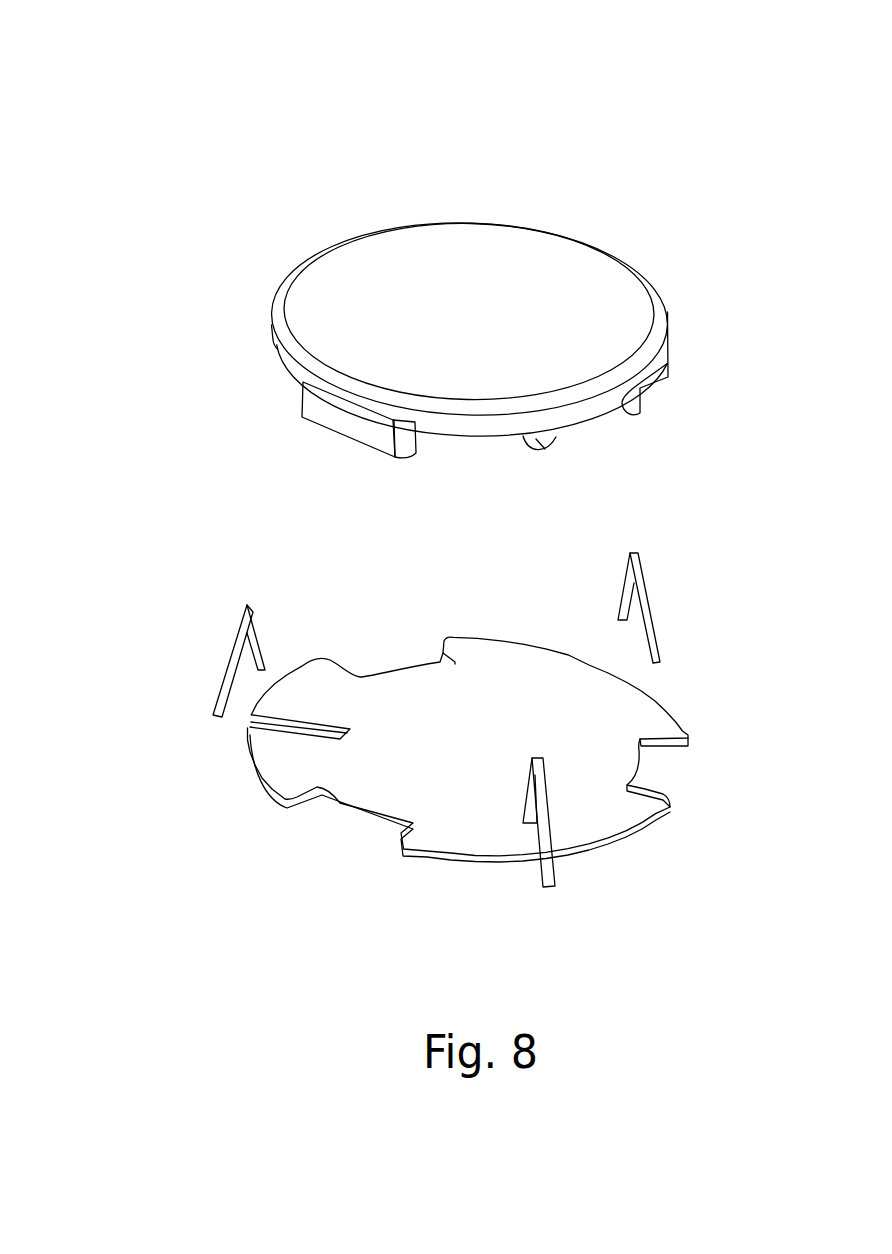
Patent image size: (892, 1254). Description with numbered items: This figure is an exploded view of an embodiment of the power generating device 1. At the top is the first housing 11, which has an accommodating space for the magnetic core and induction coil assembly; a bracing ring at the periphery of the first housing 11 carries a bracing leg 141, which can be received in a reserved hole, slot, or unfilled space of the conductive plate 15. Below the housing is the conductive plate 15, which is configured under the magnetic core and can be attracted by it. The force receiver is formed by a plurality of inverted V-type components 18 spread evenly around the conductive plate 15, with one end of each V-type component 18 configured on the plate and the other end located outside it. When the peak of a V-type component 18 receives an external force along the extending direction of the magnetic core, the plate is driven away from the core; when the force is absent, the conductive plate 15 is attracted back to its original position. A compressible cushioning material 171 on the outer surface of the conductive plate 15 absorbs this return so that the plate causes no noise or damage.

The power generating device 1 is at (475, 98).
The first housing 11 is at (666, 314).
The bracing leg 141 is at (333, 424).
The cushioning material 171 is at (556, 442).
The conductive plate 15 is at (647, 814).
The inverted V-type components 18 is at (649, 623).